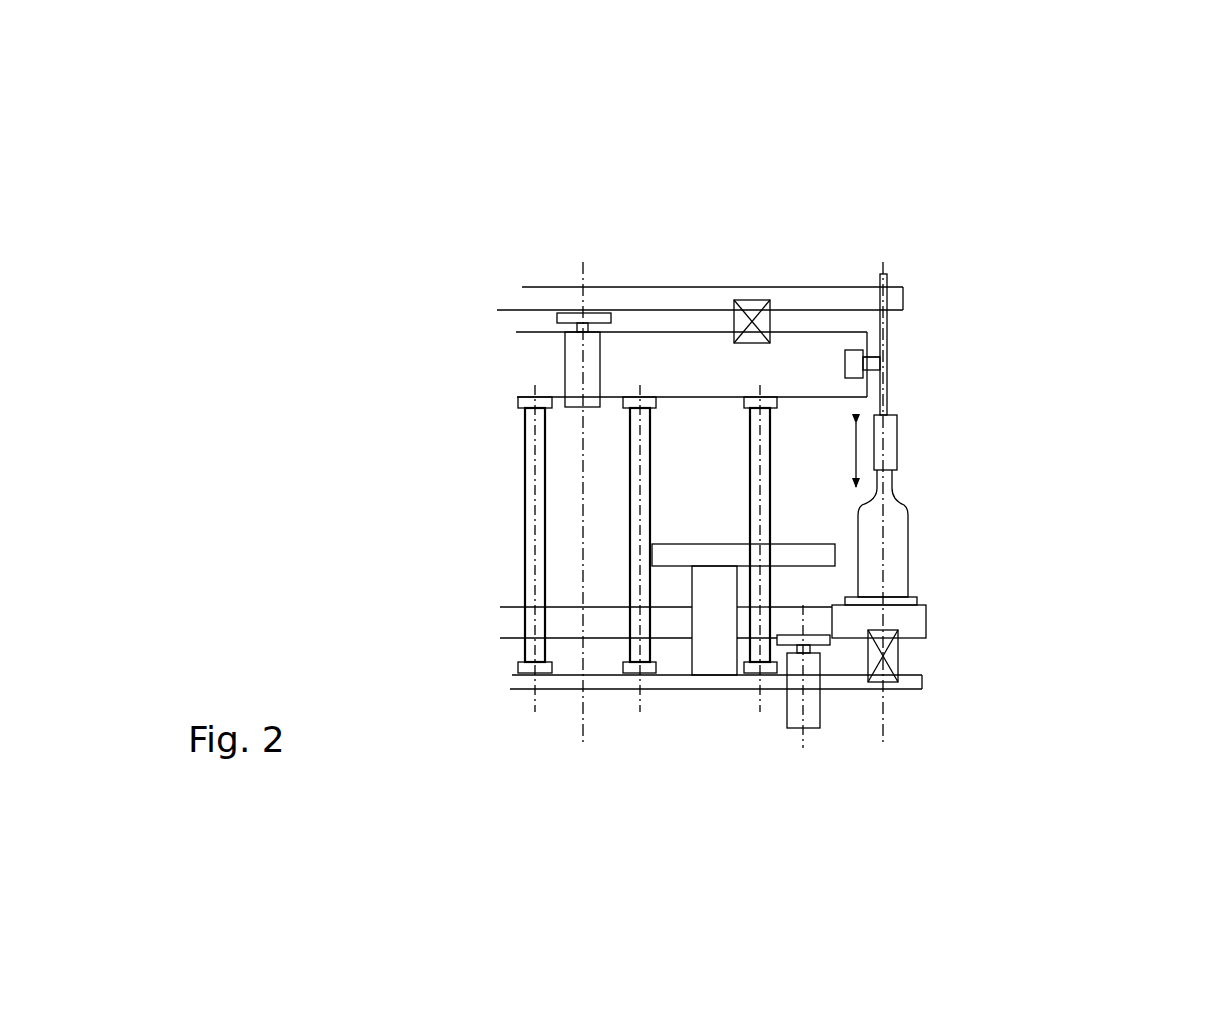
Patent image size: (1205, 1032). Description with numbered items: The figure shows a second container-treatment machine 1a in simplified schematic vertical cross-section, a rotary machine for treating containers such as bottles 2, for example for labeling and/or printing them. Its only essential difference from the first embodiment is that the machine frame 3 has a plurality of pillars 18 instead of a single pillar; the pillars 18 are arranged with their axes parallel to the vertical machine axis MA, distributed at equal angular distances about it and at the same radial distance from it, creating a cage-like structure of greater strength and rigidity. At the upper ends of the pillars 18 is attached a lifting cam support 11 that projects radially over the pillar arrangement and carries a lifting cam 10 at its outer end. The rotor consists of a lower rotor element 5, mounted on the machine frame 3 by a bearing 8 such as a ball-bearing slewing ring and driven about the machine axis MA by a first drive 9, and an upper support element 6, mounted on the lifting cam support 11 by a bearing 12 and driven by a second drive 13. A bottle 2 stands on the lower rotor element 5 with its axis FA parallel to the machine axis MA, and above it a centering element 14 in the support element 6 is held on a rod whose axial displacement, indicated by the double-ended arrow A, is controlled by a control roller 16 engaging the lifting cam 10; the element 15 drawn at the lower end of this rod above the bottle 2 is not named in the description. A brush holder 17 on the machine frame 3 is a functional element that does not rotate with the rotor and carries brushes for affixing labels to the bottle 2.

The second container-treatment machine 1a is at (525, 205).
The bottle 2 is at (910, 531).
The machine frame 3 is at (585, 695).
The lower annular rotor element 5 is at (923, 618).
The upper support element 6 is at (803, 295).
The bearing 8 is at (895, 655).
The first drive 9 is at (803, 695).
The lifting cam 10 is at (857, 350).
The lifting cam support 11 is at (673, 348).
The bearing 12 is at (757, 300).
The second drive 13 is at (578, 358).
The centering element 14 is at (902, 388).
The gripper / filling element 15 is at (933, 477).
The control roller 16 is at (855, 370).
The brush holder 17 is at (728, 552).
The pillars 18 is at (630, 465).
The machine axis MA is at (580, 260).
The axis FA is at (885, 262).
The double-ended arrow A is at (835, 455).